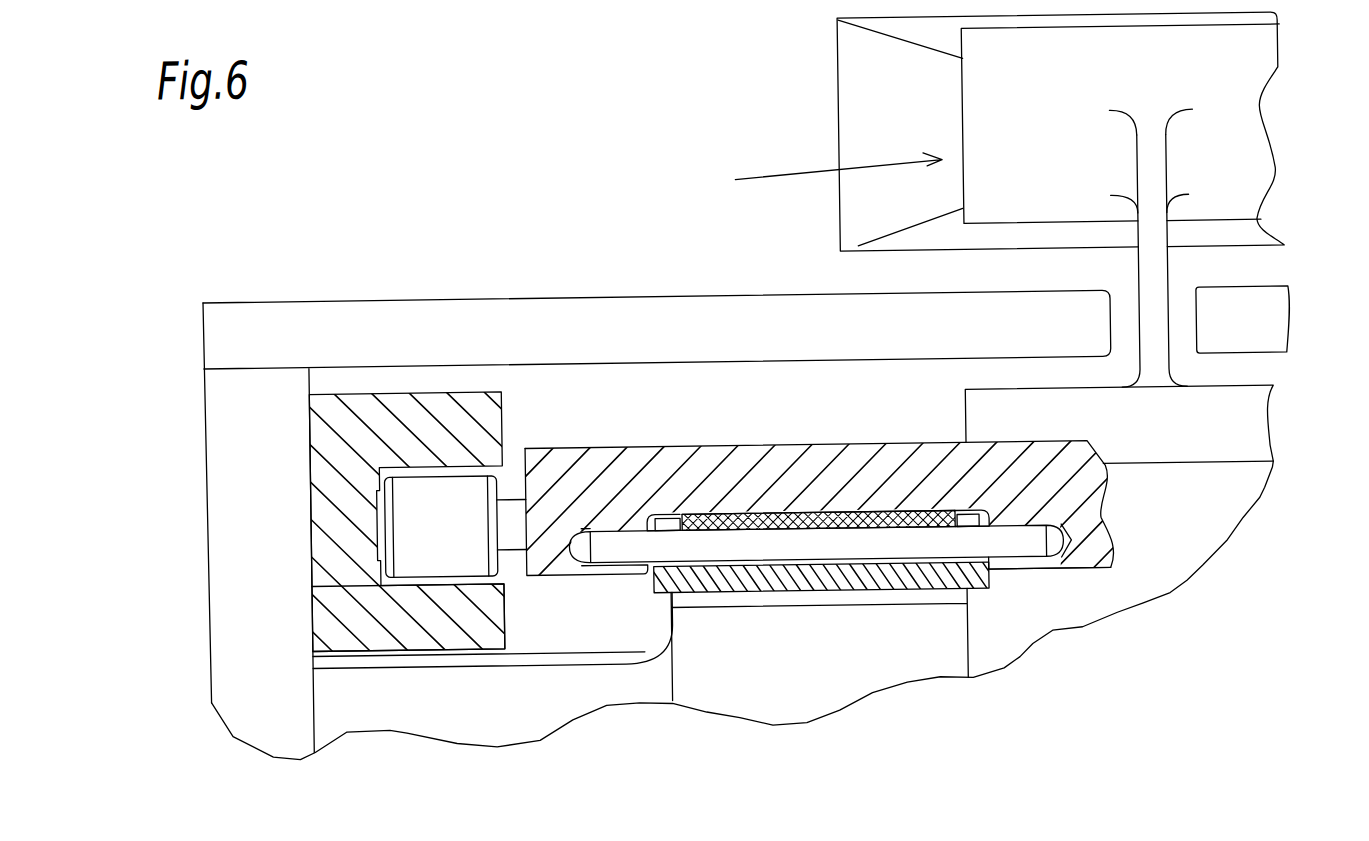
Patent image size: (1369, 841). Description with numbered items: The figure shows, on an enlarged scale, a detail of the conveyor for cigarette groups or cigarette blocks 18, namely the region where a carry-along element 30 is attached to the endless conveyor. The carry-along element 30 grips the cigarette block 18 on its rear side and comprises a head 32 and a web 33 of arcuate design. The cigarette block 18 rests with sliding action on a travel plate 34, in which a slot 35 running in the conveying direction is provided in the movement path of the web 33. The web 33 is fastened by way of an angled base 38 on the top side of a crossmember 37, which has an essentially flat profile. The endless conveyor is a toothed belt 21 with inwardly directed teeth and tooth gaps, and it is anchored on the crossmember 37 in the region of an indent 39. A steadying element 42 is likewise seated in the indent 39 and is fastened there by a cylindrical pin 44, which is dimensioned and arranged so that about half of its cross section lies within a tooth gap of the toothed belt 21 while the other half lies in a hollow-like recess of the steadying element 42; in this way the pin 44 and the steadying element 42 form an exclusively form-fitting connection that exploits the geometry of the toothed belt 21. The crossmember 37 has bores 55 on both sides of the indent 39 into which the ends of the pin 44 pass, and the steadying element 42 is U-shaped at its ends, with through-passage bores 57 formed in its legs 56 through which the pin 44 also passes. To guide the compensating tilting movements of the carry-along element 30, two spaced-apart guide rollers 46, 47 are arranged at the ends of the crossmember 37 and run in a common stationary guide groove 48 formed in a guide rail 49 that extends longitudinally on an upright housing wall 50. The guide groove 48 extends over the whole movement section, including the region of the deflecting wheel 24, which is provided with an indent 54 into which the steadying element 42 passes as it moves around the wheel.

The cigarette block 18 is at (840, 81).
The toothed belt 21 is at (862, 516).
The deflecting wheel 24 is at (953, 654).
The carry-along element 30 is at (815, 176).
The head 32 is at (1019, 108).
The web 33 is at (1148, 280).
The travel plate 34 is at (412, 325).
The slot 35 is at (1178, 326).
The crossmember 37 is at (663, 432).
The angled base 38 is at (1230, 442).
The indent 39 is at (787, 520).
The steadying element 42 is at (793, 620).
The pin 44 is at (697, 547).
The guide roller 46 is at (310, 502).
The guide roller 47 is at (420, 535).
The guide groove 48 is at (431, 585).
The guide rail 49 is at (350, 424).
The housing wall 50 is at (244, 616).
The indent 54 is at (856, 612).
The bore 55 is at (574, 555).
The leg 56 is at (677, 520).
The through-passage bore 57 is at (642, 527).